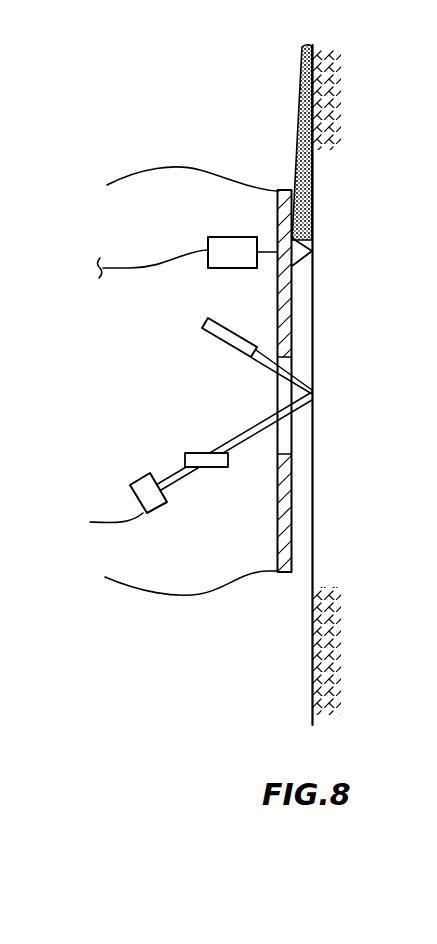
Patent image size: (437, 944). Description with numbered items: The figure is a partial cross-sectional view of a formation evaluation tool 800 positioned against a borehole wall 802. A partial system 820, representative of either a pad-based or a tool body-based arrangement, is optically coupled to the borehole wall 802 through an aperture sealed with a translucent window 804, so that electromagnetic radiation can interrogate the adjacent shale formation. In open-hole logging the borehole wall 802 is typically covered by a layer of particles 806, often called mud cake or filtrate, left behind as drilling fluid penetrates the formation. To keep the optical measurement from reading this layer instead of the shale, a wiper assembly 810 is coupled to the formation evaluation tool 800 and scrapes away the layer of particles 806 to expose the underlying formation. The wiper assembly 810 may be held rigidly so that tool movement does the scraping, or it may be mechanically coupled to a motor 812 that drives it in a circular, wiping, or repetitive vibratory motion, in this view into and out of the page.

The formation evaluation tool 800 is at (150, 133).
The borehole wall 802 is at (312, 667).
The translucent window 804 is at (287, 435).
The layer of particles 806 is at (313, 102).
The wiper assembly 810 is at (313, 238).
The motor 812 is at (218, 237).
The system 820 is at (235, 403).